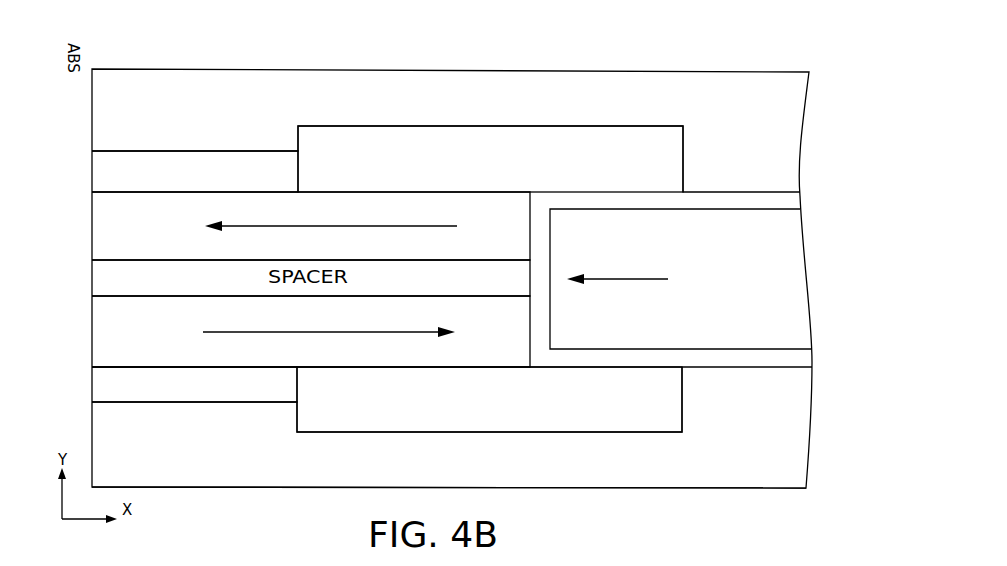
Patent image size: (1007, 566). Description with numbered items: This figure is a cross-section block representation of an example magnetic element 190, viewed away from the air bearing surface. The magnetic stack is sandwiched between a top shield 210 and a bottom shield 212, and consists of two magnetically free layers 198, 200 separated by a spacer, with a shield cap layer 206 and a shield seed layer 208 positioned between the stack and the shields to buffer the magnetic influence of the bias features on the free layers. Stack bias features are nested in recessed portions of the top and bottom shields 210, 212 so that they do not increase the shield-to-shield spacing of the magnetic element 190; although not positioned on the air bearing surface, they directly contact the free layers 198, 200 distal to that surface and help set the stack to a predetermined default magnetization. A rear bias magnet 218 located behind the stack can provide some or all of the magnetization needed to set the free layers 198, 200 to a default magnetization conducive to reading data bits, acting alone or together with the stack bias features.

The magnetic element 190 is at (752, 52).
The free layer 198 is at (311, 226).
The free layer 200 is at (311, 331).
The shield cap layer 206 is at (195, 171).
The shield seed layer 208 is at (194, 384).
The top shield 210 is at (446, 134).
The bottom shield 212 is at (449, 427).
The rear bias magnet 218 is at (680, 279).